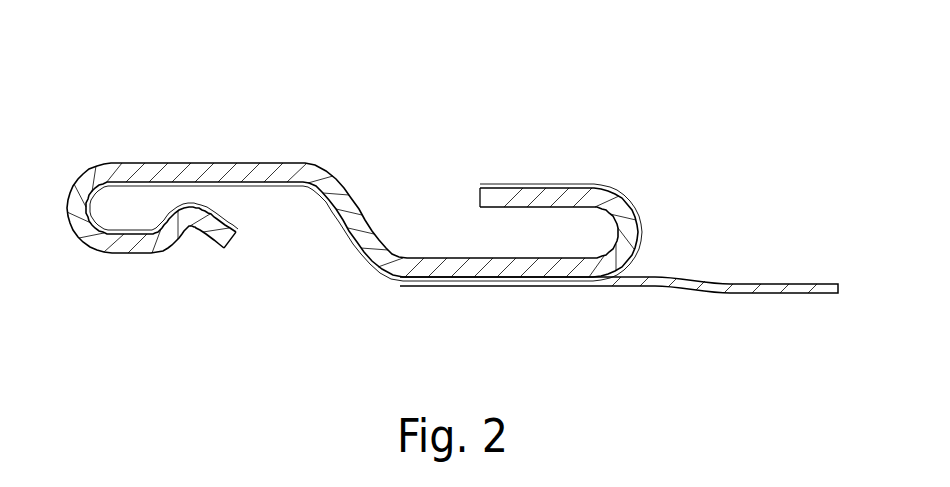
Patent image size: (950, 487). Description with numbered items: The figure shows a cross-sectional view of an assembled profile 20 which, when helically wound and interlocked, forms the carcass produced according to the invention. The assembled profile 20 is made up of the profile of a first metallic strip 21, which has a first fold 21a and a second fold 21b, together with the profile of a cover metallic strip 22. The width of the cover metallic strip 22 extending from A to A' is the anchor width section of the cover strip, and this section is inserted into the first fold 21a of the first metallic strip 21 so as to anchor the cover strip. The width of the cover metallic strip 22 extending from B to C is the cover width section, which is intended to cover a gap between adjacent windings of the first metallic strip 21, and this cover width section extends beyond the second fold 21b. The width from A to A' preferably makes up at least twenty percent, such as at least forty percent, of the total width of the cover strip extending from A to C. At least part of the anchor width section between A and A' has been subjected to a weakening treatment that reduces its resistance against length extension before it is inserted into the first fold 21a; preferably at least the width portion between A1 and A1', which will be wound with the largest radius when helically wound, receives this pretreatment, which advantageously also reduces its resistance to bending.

The assembled profile 20 is at (405, 127).
The first metallic strip 21 is at (598, 190).
The first fold 21a is at (102, 164).
The second fold 21b is at (550, 196).
The cover metallic strip 22 is at (782, 283).
The point A is at (262, 274).
The point A1 is at (141, 250).
The point A1' is at (313, 122).
The point A' is at (338, 313).
The point B is at (597, 285).
The point C is at (838, 296).